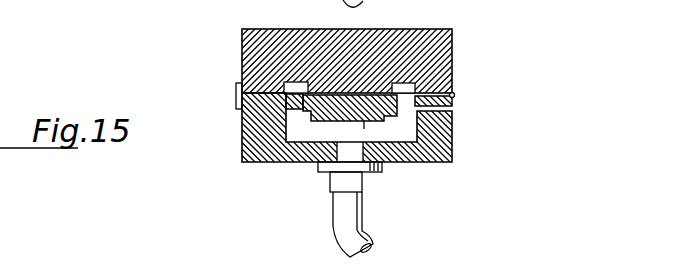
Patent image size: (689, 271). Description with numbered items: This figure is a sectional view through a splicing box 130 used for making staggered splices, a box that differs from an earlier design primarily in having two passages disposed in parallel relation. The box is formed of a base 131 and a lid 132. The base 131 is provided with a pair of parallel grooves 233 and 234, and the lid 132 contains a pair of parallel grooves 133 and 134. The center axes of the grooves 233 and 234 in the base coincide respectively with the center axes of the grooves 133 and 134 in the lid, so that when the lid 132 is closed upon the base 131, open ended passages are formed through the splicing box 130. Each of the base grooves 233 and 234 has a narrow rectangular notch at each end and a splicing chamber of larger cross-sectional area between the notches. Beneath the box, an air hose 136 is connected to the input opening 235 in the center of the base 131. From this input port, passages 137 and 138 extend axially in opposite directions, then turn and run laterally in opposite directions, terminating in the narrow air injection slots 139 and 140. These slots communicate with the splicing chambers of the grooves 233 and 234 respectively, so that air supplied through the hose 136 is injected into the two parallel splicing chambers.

The splicing box 130 is at (470, 58).
The base 131 is at (447, 138).
The lid 132 is at (448, 45).
The groove 133 is at (403, 83).
The groove 134 is at (287, 88).
The groove 234 is at (292, 106).
The groove 233 is at (455, 95).
The air injection slot 139 is at (413, 113).
The air injection slot 140 is at (297, 109).
The passage 138 is at (293, 133).
The input opening 235 is at (348, 153).
The passage 137 is at (401, 162).
The air hose 136 is at (358, 228).